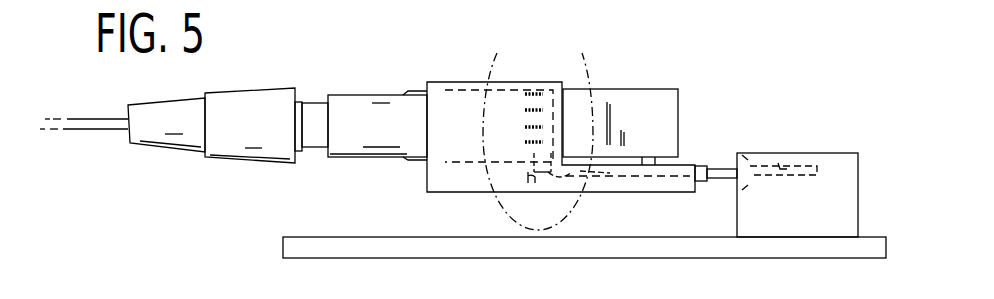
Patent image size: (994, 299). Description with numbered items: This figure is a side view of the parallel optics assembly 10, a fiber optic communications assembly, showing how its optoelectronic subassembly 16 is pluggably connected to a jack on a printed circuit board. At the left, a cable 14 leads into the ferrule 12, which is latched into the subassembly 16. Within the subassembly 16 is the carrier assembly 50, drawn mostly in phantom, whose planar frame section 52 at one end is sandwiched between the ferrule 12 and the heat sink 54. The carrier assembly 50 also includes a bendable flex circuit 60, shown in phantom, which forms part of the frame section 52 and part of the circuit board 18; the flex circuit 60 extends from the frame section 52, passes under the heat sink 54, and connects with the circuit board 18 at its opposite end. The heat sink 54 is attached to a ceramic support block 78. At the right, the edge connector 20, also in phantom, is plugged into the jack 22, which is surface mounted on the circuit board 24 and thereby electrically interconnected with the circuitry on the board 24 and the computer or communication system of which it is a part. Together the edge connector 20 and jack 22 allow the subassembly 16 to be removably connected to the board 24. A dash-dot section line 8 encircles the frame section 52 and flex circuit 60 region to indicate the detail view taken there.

The section line 8- 8 is at (506, 41).
The parallel optics assembly 10 is at (349, 52).
The ferrule 12 is at (235, 164).
The cable 14 is at (105, 131).
The subassembly 16 is at (422, 177).
The circuit board 18 is at (719, 166).
The edge connector 20 is at (777, 163).
The jack 22 is at (840, 152).
The circuit board 24 is at (662, 259).
The carrier assembly 50 is at (713, 195).
The planar frame section 52 is at (541, 82).
The heat sink 54 is at (626, 88).
The flex circuit 60 is at (552, 205).
The ceramic support block 78 is at (456, 289).